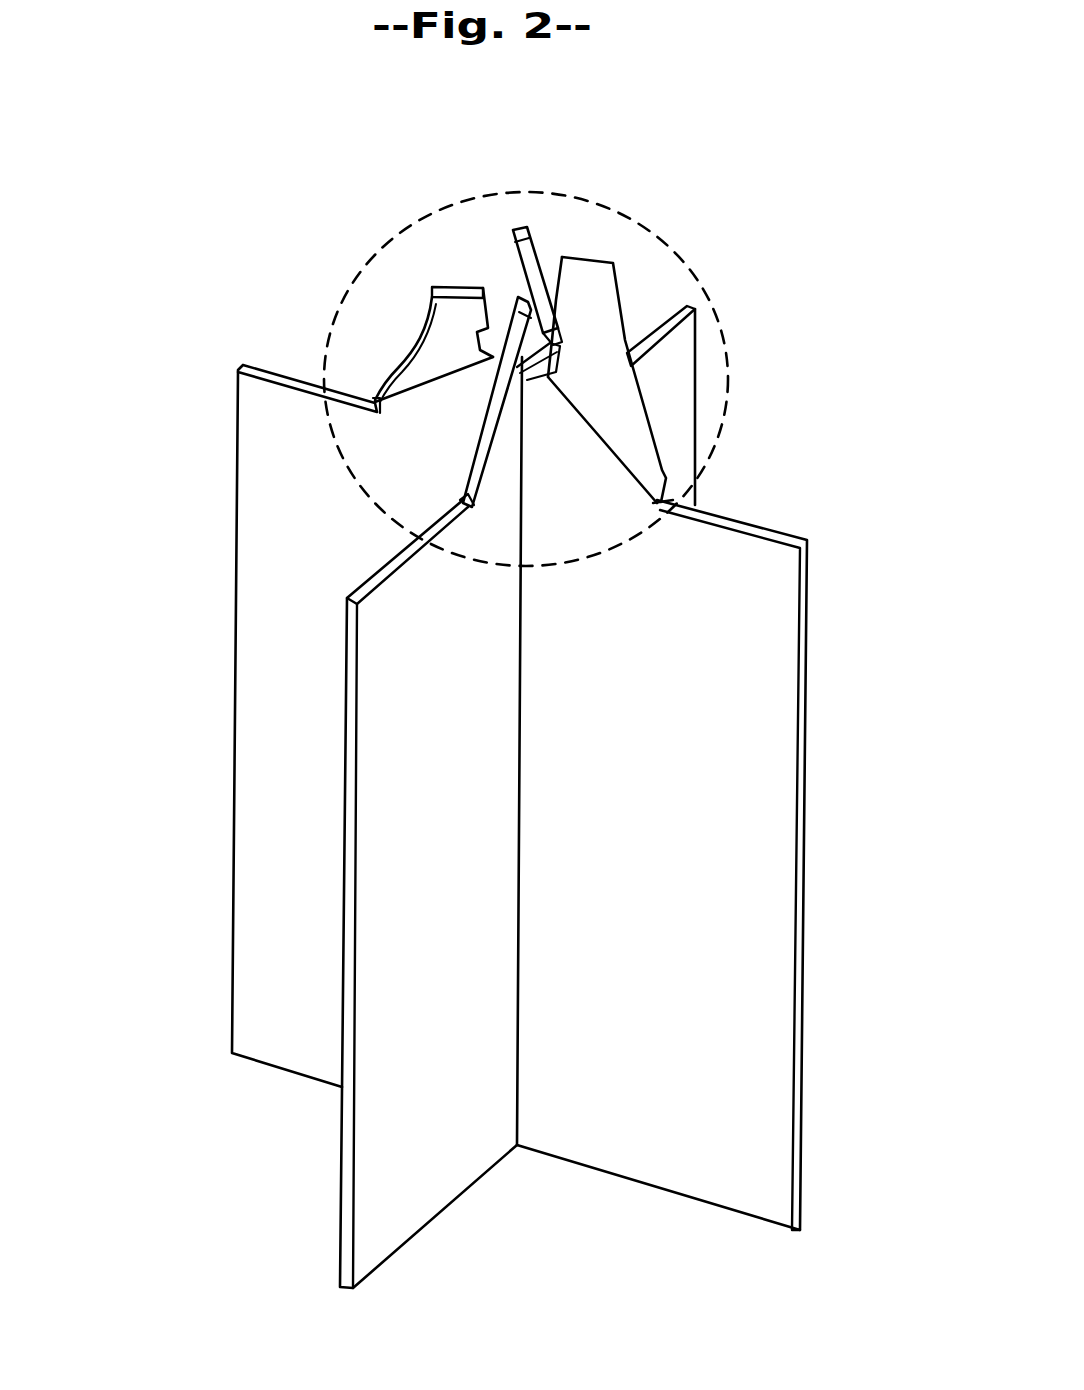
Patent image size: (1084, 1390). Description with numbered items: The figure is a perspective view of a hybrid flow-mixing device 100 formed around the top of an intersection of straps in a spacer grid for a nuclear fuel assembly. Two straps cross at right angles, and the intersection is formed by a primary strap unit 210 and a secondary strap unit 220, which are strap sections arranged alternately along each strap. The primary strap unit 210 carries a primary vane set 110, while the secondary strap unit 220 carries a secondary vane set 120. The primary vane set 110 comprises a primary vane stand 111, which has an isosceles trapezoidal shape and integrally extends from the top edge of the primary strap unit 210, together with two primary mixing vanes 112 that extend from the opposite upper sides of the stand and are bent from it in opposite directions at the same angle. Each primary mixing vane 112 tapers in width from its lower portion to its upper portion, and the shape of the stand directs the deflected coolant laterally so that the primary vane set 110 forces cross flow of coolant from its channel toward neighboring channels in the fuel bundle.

The hybrid flow-mixing device 100 is at (363, 273).
The primary vane set 110 is at (808, 295).
The primary vane stand 111 is at (583, 453).
The primary mixing vane 112 is at (623, 318).
The secondary vane set 120 is at (523, 227).
The primary strap unit 210 is at (248, 563).
The secondary strap unit 220 is at (372, 1160).